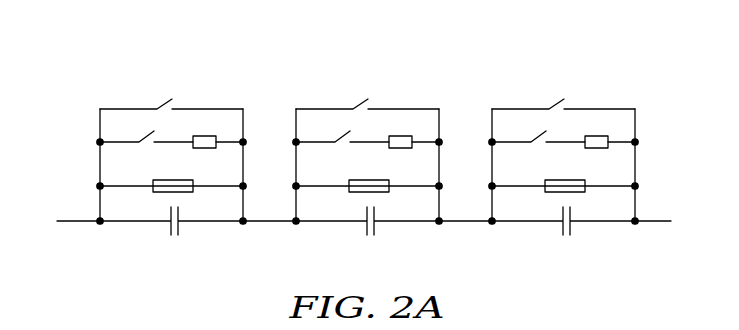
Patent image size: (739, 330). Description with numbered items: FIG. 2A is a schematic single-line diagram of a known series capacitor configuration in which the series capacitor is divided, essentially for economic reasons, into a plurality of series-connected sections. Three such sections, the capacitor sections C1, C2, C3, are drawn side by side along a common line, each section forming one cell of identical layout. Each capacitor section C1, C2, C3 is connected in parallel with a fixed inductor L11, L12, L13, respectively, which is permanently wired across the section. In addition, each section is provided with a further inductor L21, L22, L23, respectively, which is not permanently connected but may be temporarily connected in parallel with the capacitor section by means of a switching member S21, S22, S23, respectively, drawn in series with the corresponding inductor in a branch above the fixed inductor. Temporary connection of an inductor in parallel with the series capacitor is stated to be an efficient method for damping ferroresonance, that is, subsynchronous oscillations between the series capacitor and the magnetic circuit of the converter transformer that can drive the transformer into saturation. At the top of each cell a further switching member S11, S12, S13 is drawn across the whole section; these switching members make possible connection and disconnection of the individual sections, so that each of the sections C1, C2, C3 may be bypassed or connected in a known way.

The switching member S11 is at (172, 102).
The switching member S21 is at (140, 140).
The inductor L21 is at (205, 135).
The fixed inductor L11 is at (183, 192).
The series capacitor section C1 is at (170, 231).
The switching member S12 is at (368, 102).
The switching member S22 is at (336, 140).
The inductor L22 is at (401, 135).
The fixed inductor L12 is at (379, 192).
The series capacitor section C2 is at (366, 231).
The switching member S13 is at (564, 102).
The switching member S23 is at (532, 140).
The inductor L23 is at (597, 135).
The fixed inductor L13 is at (575, 192).
The series capacitor section C3 is at (562, 231).